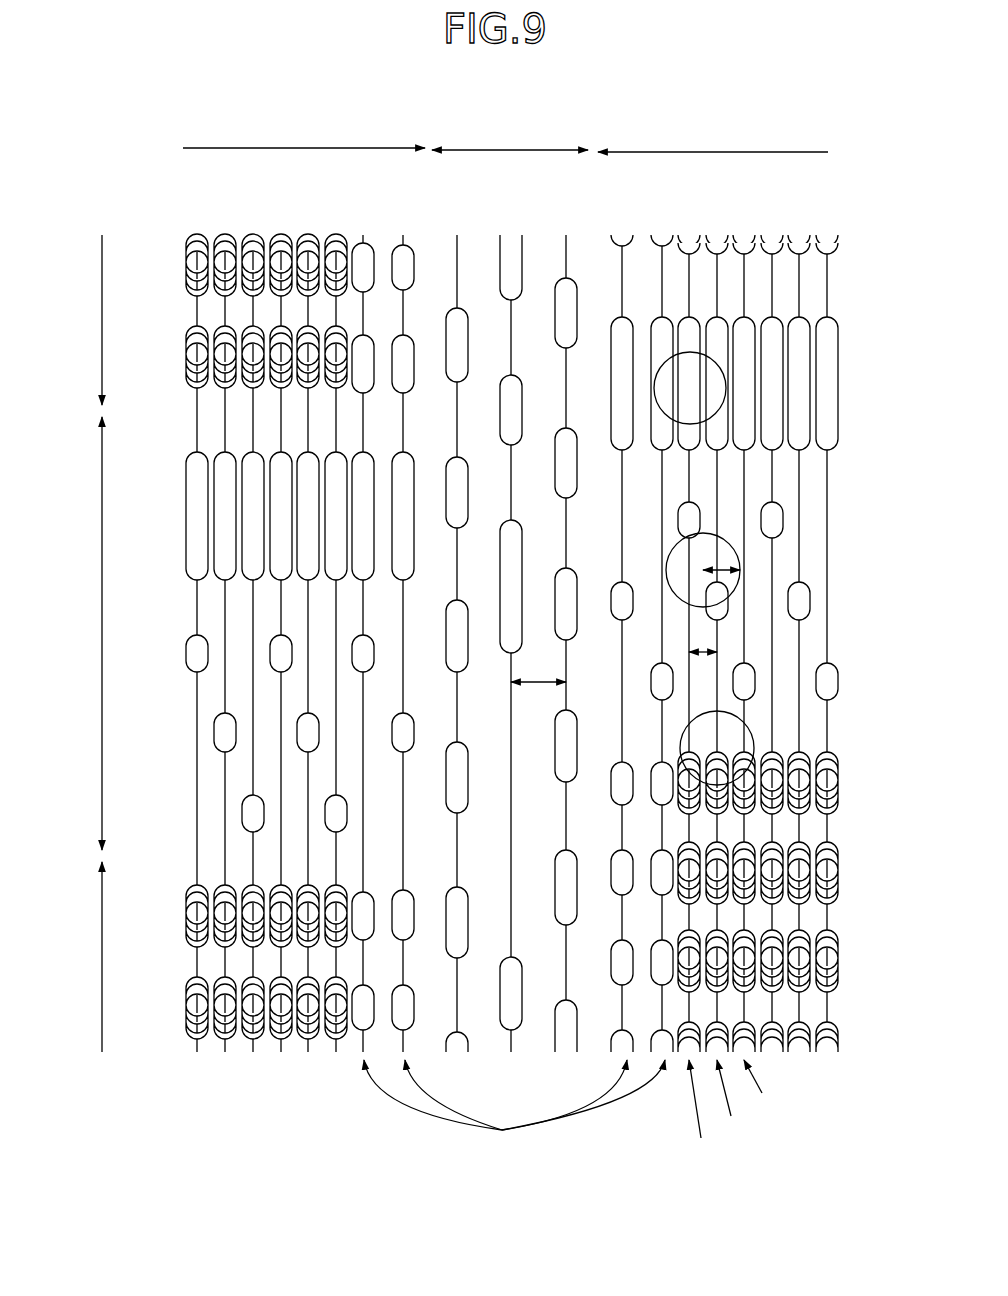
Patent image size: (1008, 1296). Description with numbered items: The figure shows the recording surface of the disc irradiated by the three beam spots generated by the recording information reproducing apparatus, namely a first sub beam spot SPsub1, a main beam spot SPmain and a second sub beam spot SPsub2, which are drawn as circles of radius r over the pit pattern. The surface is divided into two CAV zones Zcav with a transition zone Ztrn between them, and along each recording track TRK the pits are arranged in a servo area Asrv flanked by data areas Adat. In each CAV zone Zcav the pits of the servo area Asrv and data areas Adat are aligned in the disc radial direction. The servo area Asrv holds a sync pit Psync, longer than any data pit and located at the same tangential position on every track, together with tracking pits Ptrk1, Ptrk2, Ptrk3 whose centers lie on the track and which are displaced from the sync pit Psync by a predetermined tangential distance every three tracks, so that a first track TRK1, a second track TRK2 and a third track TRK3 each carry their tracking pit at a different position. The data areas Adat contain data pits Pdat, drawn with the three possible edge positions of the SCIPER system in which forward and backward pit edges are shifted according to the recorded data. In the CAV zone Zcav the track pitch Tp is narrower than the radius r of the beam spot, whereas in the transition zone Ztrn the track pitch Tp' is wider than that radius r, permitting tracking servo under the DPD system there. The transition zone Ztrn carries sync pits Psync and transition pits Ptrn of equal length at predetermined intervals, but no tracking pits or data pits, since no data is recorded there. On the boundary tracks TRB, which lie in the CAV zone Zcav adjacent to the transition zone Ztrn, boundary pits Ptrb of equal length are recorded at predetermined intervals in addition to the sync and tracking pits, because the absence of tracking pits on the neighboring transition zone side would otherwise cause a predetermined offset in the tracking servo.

The recording track TRK is at (833, 478).
The data pit Pdat is at (191, 355).
The sync pit Psync is at (190, 492).
The tracking pit Ptrk1 is at (190, 656).
The tracking pit Ptrk2 is at (217, 732).
The tracking pit Ptrk3 is at (246, 812).
The boundary pit Ptrb is at (411, 340).
The transition pit Ptrn is at (563, 285).
The first sub beam spot SPsub1 is at (722, 360).
The main beam spot SPmain is at (740, 558).
The second sub beam spot SPsub2 is at (760, 795).
The beam spot radius r is at (721, 559).
The track pitch Tp is at (703, 640).
The transition zone track pitch Tp' is at (538, 669).
The CAV zone Zcav is at (505, 139).
The transition zone Ztrn is at (510, 138).
The data area Adat is at (73, 643).
The servo area Asrv is at (73, 633).
The boundary track TRB is at (514, 1111).
The first track TRK1 is at (714, 1112).
The second track TRK2 is at (744, 1100).
The third track TRK3 is at (775, 1089).